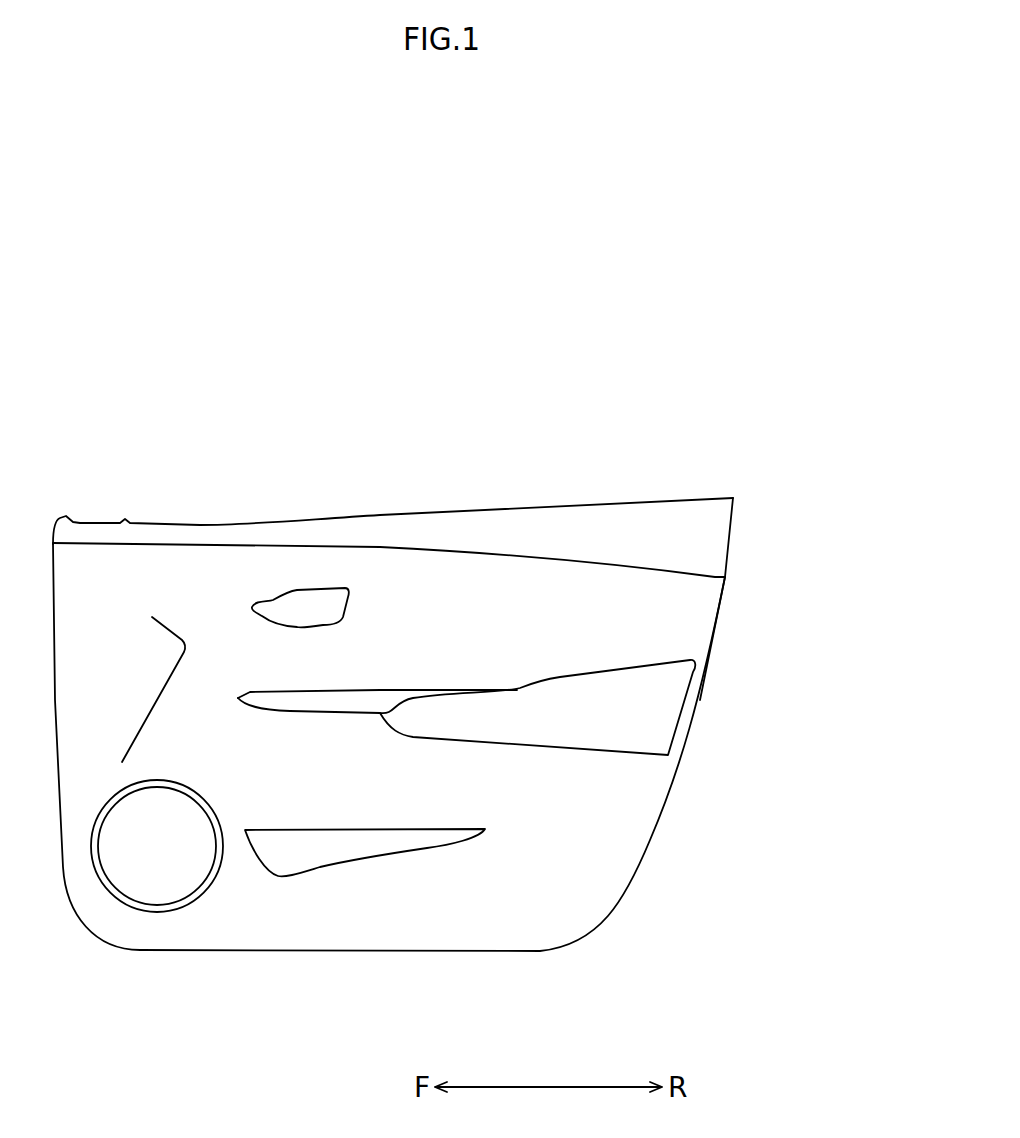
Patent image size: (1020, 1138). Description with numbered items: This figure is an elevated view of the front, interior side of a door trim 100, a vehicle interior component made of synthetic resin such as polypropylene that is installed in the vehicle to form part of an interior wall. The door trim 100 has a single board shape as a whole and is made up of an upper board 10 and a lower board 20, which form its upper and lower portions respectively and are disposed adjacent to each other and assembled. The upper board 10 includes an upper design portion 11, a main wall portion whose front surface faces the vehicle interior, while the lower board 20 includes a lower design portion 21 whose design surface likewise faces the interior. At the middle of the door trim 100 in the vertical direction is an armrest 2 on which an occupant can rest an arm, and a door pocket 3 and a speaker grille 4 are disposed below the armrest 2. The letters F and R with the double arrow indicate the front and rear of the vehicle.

The door trim 100 is at (813, 522).
The upper board 10 is at (439, 505).
The upper design portion 11 is at (628, 535).
The lower board 20 is at (745, 617).
The lower design portion 21 is at (620, 635).
The armrest 2 is at (632, 723).
The door pocket 3 is at (398, 850).
The speaker grille 4 is at (162, 904).